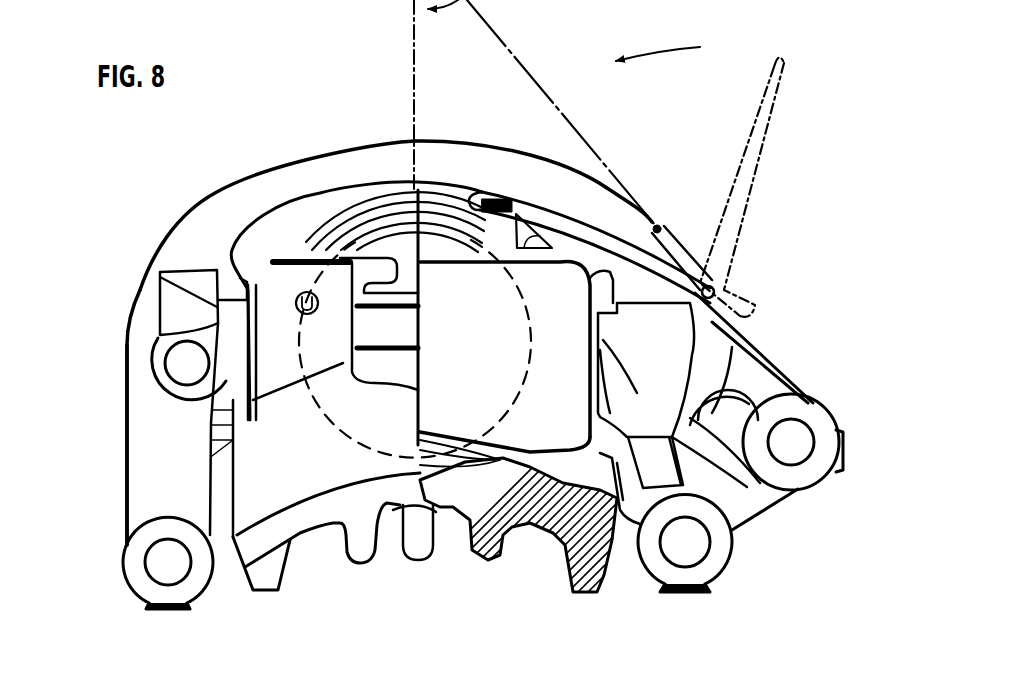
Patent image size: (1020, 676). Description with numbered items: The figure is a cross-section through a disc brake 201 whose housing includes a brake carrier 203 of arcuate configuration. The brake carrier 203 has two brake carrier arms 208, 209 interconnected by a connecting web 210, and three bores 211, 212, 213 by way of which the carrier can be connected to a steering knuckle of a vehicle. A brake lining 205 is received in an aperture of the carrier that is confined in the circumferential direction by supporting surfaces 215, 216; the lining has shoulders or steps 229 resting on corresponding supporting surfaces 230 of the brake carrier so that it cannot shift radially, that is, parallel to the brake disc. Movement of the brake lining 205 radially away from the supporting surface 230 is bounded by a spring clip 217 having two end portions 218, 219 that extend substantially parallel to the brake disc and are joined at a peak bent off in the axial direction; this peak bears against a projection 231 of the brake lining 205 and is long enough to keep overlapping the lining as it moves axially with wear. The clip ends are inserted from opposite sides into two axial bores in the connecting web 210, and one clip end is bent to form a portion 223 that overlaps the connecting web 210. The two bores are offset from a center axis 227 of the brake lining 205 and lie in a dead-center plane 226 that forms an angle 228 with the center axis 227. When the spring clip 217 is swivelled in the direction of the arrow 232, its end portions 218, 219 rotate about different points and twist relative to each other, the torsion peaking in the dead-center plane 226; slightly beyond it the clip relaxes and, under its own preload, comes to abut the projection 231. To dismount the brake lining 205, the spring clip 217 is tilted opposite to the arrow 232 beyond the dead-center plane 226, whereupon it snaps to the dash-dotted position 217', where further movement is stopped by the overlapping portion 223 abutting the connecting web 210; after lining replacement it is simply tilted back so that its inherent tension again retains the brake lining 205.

The disc brake 201 is at (298, 140).
The brake carrier 203 is at (160, 255).
The brake lining 205 is at (577, 224).
The brake carrier arm 208 is at (136, 425).
The brake carrier arm 209 is at (763, 366).
The connecting web 210 is at (248, 180).
The bore 211 is at (162, 560).
The bore 212 is at (697, 545).
The bore 213 is at (800, 440).
The supporting surface 215 is at (588, 357).
The supporting surface 216 is at (160, 300).
The spring clip 217 is at (589, 203).
The position of the spring clip 217' is at (770, 186).
The end portion 218 is at (657, 226).
The end portion 219 is at (690, 335).
The overlapping portion 223 is at (735, 277).
The dead-center plane 226 is at (520, 53).
The center axis 227 is at (413, 58).
The angle 228 is at (446, 8).
The shoulder or step 229 is at (604, 326).
The supporting surface 230 is at (590, 294).
The projection 231 is at (483, 223).
The arrow 232 is at (668, 45).